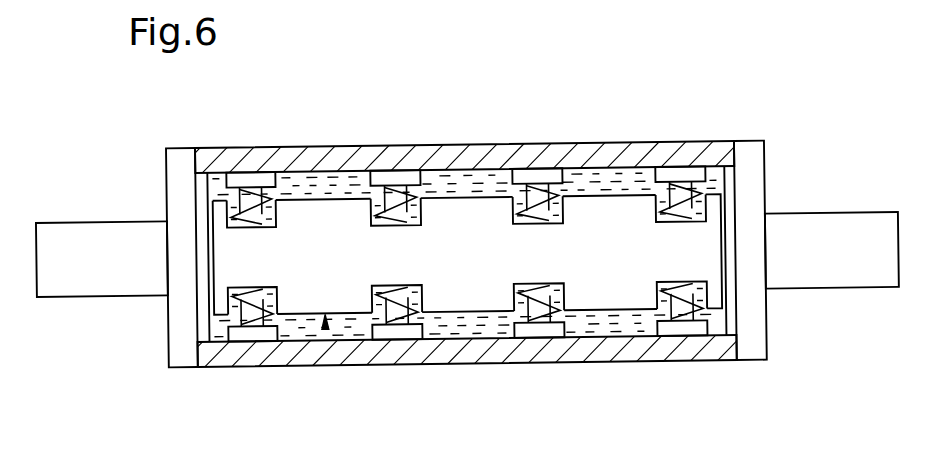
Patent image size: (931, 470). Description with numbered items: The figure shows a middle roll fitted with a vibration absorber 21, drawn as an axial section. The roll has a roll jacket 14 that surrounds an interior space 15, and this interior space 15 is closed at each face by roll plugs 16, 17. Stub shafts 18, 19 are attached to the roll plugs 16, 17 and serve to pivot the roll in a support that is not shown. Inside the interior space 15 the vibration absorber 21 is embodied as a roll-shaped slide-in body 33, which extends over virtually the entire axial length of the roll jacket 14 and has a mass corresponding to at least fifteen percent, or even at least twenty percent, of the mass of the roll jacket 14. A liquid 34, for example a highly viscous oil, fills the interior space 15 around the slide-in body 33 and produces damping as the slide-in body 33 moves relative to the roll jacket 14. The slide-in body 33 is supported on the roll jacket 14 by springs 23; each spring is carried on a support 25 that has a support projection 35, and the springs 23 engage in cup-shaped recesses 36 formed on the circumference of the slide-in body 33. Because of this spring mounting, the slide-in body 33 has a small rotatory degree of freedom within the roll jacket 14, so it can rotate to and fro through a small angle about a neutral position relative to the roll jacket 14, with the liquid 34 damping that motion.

The roll jacket 14 is at (222, 157).
The interior space 15 is at (465, 331).
The roll plug 16 is at (171, 325).
The roll plug 17 is at (757, 349).
The stub shaft 18 is at (106, 231).
The stub shaft 19 is at (809, 233).
The vibration absorber 21 is at (322, 330).
The springs 23 is at (261, 199).
The support 25 is at (240, 177).
The slide-in body 33 is at (343, 299).
The liquid 34 is at (600, 335).
The support projection 35 is at (255, 194).
The cup-shaped recesses 36 is at (277, 209).